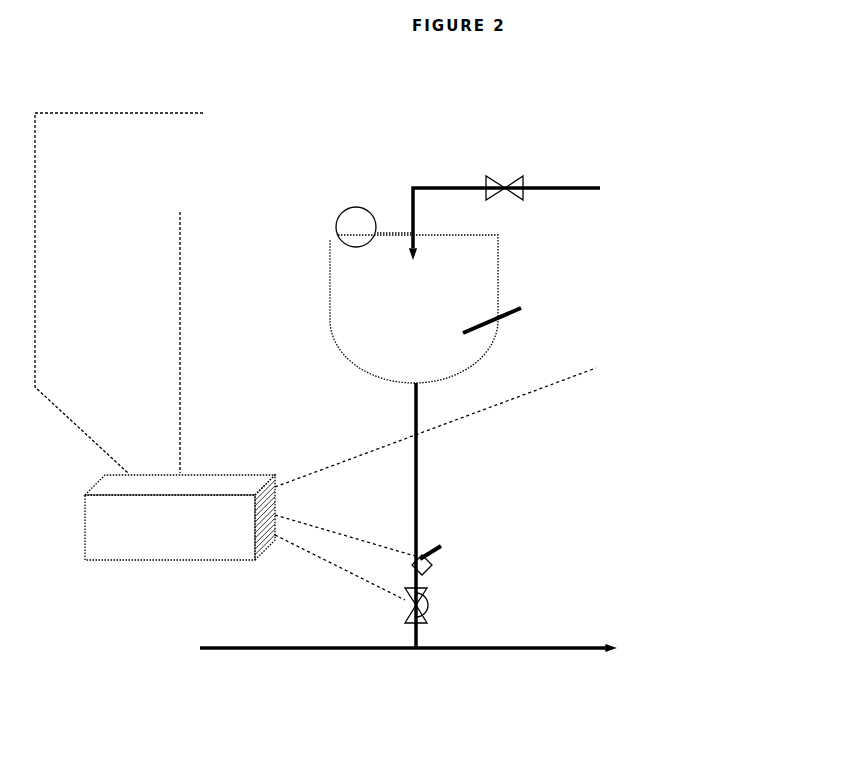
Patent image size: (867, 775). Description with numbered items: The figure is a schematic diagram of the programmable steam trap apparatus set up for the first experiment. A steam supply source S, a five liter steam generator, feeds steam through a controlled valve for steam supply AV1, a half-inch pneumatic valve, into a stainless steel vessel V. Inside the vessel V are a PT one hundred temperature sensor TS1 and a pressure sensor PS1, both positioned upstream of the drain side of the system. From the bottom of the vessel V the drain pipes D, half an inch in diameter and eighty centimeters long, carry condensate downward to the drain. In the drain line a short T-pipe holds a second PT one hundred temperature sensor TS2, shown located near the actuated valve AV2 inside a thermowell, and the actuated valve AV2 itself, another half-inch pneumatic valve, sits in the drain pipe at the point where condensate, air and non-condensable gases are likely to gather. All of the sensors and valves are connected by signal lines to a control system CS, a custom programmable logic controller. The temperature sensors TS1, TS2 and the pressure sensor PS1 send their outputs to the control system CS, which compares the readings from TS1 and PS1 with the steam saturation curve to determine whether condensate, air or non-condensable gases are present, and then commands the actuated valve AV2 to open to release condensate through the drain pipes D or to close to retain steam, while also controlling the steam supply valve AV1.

The steam supply source S is at (564, 214).
The controlled valve for steam supply AV1 is at (478, 157).
The pressure sensor PS1 is at (325, 206).
The vessel V is at (506, 272).
The temperature sensor TS1 is at (522, 310).
The temperature sensor TS2 is at (456, 541).
The control system CS is at (315, 356).
The actuated valve AV2 is at (449, 604).
The drain pipes D is at (620, 666).